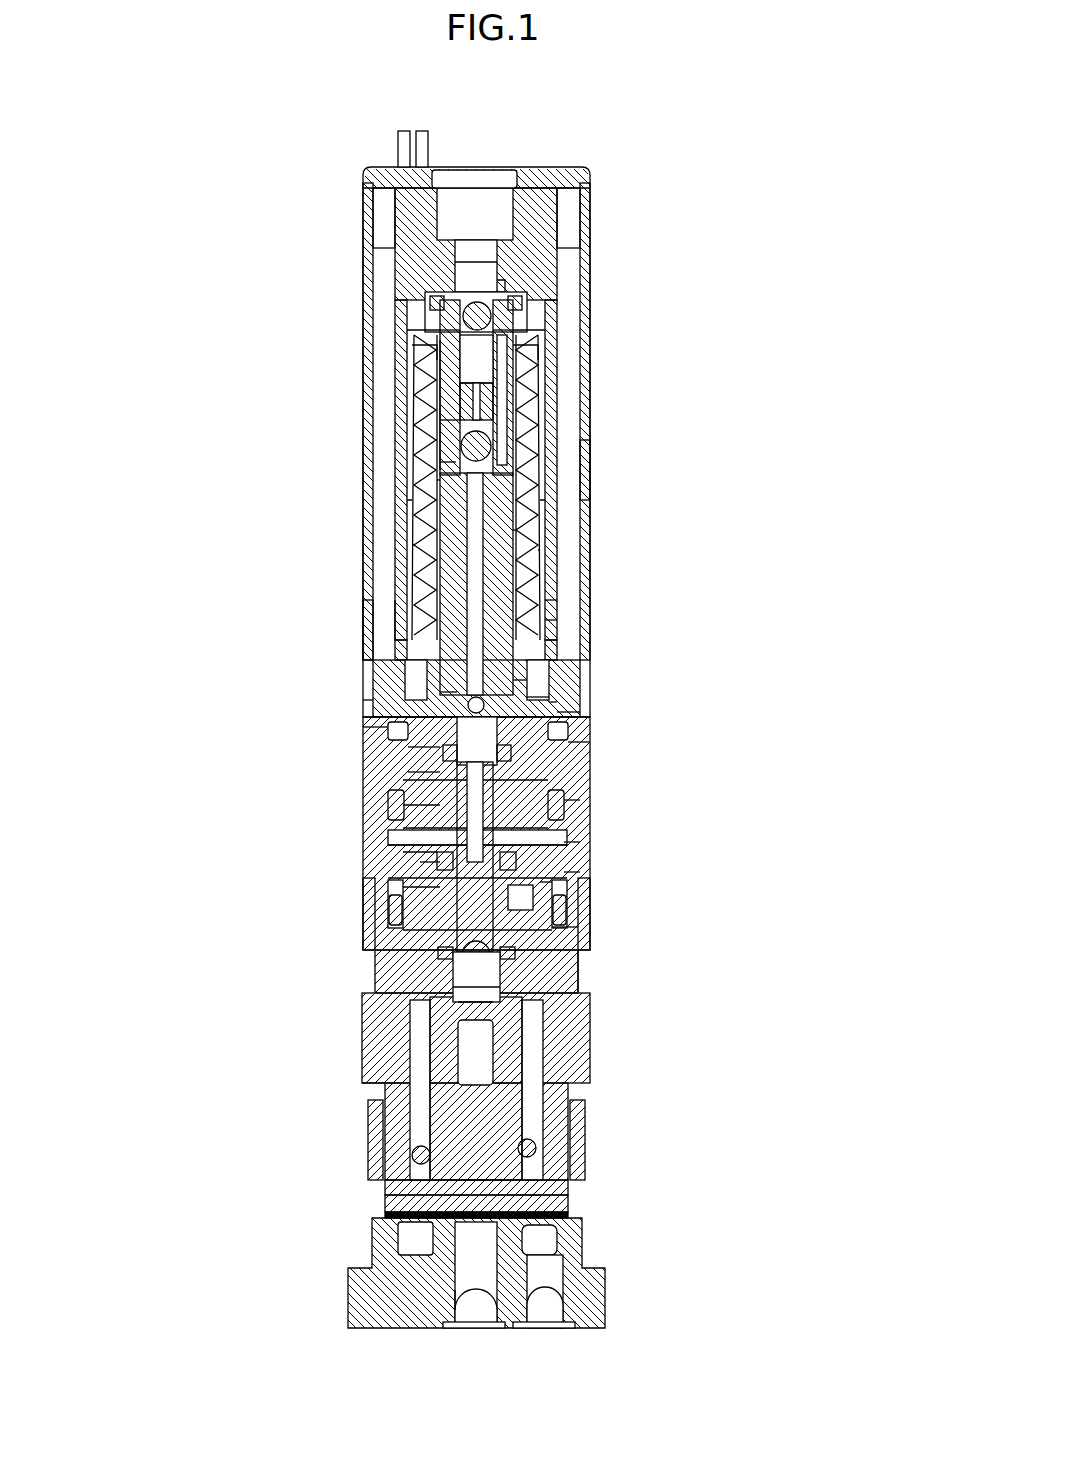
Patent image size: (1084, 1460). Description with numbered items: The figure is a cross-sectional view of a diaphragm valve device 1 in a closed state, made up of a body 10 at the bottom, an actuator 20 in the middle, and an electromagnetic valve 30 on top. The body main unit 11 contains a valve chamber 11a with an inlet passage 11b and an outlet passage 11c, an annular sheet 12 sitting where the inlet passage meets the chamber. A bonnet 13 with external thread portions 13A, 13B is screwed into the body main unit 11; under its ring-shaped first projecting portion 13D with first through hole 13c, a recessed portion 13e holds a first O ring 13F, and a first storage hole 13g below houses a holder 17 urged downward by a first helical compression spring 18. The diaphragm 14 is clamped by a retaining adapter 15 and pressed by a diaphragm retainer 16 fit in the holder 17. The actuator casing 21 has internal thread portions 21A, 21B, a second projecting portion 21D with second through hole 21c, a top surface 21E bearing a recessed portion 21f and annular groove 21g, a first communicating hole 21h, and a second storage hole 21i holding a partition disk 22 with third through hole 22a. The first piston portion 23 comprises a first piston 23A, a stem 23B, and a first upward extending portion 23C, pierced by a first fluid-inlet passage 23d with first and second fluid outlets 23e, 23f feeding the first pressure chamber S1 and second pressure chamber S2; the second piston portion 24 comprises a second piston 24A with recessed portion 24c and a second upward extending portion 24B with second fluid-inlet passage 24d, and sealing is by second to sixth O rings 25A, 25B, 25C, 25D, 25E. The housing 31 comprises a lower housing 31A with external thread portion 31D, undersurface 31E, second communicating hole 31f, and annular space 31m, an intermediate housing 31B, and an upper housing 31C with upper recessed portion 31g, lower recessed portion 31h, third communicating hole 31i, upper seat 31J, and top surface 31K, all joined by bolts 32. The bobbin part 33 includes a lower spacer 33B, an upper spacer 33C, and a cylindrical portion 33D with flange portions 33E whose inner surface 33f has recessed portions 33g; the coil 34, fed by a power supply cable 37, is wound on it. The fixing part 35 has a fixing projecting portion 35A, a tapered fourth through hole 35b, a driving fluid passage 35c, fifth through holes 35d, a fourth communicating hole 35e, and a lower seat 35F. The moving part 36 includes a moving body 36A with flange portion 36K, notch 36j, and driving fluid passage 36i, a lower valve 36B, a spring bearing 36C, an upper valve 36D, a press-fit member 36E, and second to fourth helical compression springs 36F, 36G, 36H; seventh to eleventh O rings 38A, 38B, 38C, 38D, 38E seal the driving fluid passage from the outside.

The valve device 1 is at (742, 158).
The body 10 is at (673, 1137).
The body main unit 11 is at (395, 1332).
The valve chamber 11a is at (420, 1247).
The inlet passage 11b is at (480, 1292).
The outlet passage 11c is at (577, 1272).
The sheet 12 is at (502, 1282).
The bonnet 13 is at (577, 1052).
The external thread portion 13A is at (582, 952).
The external thread portion 13B is at (587, 1112).
The first through hole 13c is at (492, 1022).
The first projecting portion 13D is at (492, 992).
The recessed portion 13e is at (455, 967).
The first O ring 13F is at (465, 987).
The first storage hole 13g is at (410, 1092).
The diaphragm 14 is at (537, 1282).
The retaining adapter 15 is at (440, 1197).
The diaphragm retainer 16 is at (430, 1182).
The holder 17 is at (420, 1127).
The first helical compression spring 18 is at (572, 1152).
The actuator 20 is at (728, 748).
The casing 21 is at (360, 802).
The internal thread portion 21A is at (420, 692).
The internal thread portion 21B is at (582, 922).
The second through hole 21c is at (420, 747).
The second projecting portion 21D is at (562, 762).
The top surface 21E is at (390, 727).
The recessed portion 21f is at (400, 717).
The annular groove 21g is at (532, 732).
The first communicating hole 21h is at (577, 742).
The second storage hole 21i is at (440, 887).
The partition disk 22 is at (582, 857).
The third through hole 22a is at (562, 882).
The first piston portion 23 is at (445, 932).
The first piston 23A is at (430, 912).
The stem 23B is at (462, 1032).
The first upward extending portion 23C is at (430, 902).
The first fluid-inlet passage 23d is at (430, 852).
The first fluid outlet 23e is at (582, 927).
The second fluid outlet 23f is at (577, 842).
The second piston portion 24 is at (430, 792).
The second piston 24A is at (430, 807).
The second upward extending portion 24B is at (582, 777).
The recessed portion 24c is at (582, 802).
The second fluid-inlet passage 24d is at (557, 792).
The second O ring 25A is at (430, 772).
The third O ring 25B is at (440, 862).
The fourth O ring 25C is at (577, 872).
The fifth O ring 25D is at (547, 907).
The sixth O ring 25E is at (542, 822).
The electromagnetic valve 30 is at (703, 276).
The housing 31 is at (476, 442).
The lower housing 31A is at (372, 632).
The intermediate housing 31B is at (562, 472).
The upper housing 31C is at (600, 225).
The external thread portion 31D is at (380, 702).
The undersurface 31E is at (562, 712).
The second communicating hole 31f is at (542, 702).
The upper recessed portion 31g is at (490, 262).
The lower recessed portion 31h is at (505, 292).
The third communicating hole 31i is at (476, 288).
The upper seat 31J is at (447, 200).
The top surface 31K is at (505, 300).
The annular space 31m is at (452, 692).
The bolts 32 is at (382, 216).
The bobbin part 33 is at (420, 442).
The lower spacer 33B is at (562, 622).
The upper spacer 33C is at (410, 345).
The cylindrical portion 33D is at (547, 424).
The flange portions 33E is at (550, 336).
The inner surface 33f is at (446, 462).
The recessed portions 33g is at (430, 502).
The coil 34 is at (482, 497).
The fixing part 35 is at (434, 527).
The fixing projecting portion 35A is at (430, 662).
The fourth through hole 35b is at (522, 532).
The driving fluid passage 35c is at (432, 547).
The fifth through holes 35d is at (426, 652).
The fourth communicating hole 35e is at (522, 682).
The lower seat 35F is at (450, 482).
The moving part 36 is at (522, 366).
The moving body 36A is at (430, 378).
The lower valve 36B is at (482, 462).
The spring bearing 36C is at (487, 412).
The upper valve 36D is at (440, 312).
The press-fit member 36E is at (517, 315).
The second helical compression spring 36F is at (430, 302).
The third helical compression spring 36G is at (426, 422).
The fourth helical compression spring 36H is at (428, 332).
The driving fluid passage 36i is at (440, 412).
The notch 36j is at (505, 388).
The flange portion 36K is at (435, 292).
The power supply cable 37 is at (398, 146).
The seventh O ring 38A is at (567, 652).
The eighth O ring 38B is at (557, 602).
The ninth O ring 38C is at (418, 360).
The tenth O ring 38D is at (522, 336).
The eleventh O ring 38E is at (542, 697).
The first pressure chamber S1 is at (567, 982).
The second pressure chamber S2 is at (420, 832).